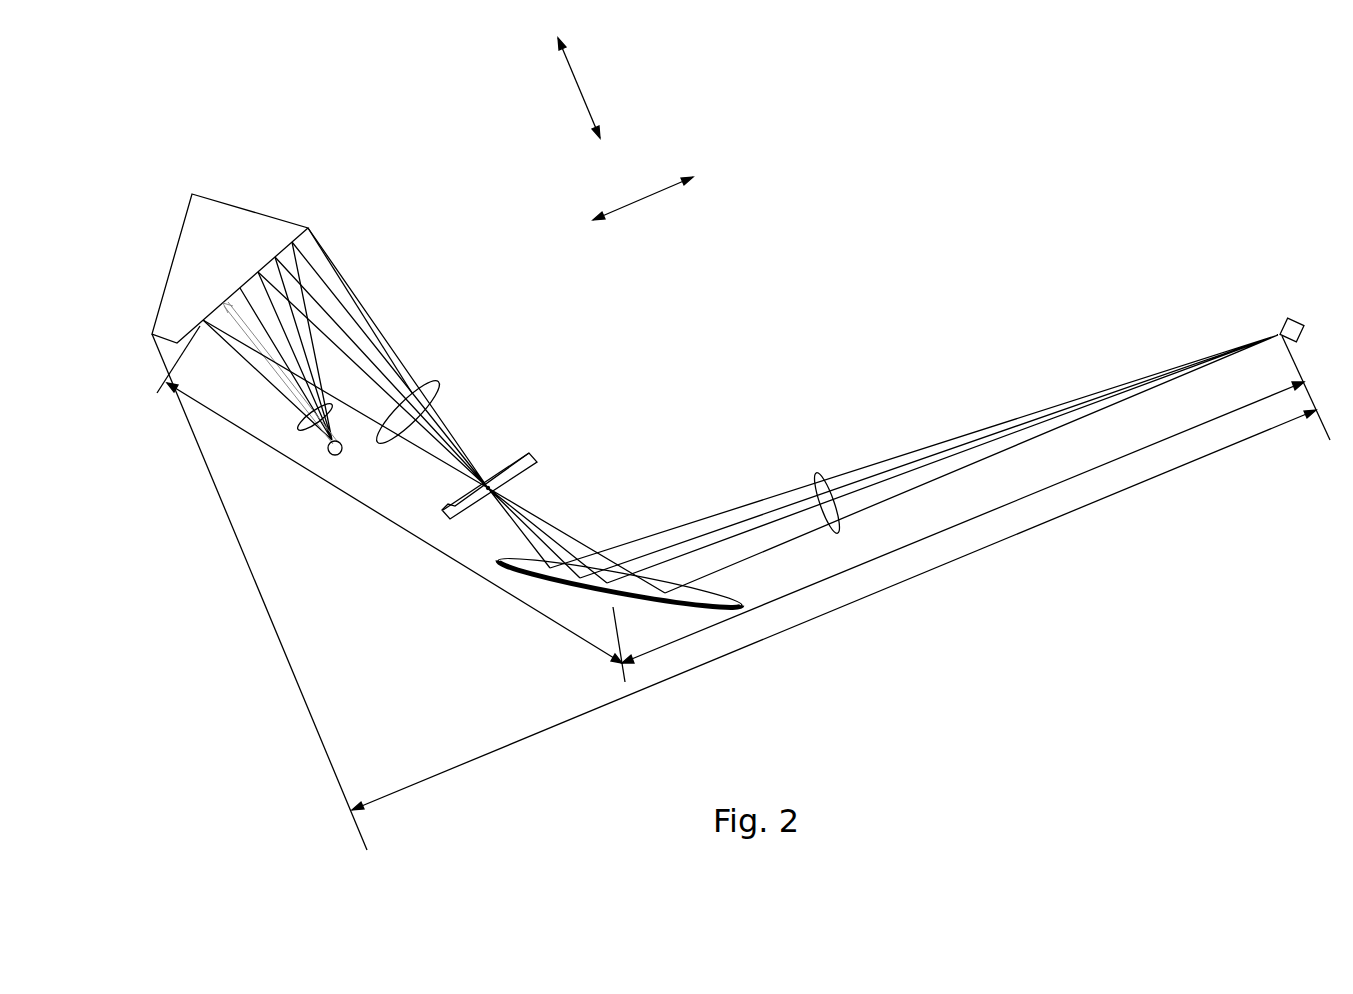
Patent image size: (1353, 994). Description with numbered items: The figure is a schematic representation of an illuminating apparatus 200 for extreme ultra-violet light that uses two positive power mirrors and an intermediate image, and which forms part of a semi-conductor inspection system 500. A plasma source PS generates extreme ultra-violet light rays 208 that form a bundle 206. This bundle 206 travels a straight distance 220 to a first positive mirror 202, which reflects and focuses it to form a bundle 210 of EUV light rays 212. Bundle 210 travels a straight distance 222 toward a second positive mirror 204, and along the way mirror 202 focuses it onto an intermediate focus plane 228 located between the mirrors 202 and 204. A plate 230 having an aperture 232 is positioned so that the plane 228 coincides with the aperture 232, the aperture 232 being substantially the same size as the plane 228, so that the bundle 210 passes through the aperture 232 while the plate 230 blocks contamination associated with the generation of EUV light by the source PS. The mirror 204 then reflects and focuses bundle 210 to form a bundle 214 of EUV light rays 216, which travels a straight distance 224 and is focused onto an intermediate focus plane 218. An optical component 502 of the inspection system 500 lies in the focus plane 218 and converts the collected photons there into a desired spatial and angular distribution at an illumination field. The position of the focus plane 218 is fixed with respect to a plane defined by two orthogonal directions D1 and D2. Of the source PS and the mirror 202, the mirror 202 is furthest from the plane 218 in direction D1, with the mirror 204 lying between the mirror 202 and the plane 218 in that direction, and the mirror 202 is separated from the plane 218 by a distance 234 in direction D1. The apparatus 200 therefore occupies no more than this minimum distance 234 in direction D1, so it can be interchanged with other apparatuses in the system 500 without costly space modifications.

The semi-conductor inspection system 500 is at (910, 117).
The illuminating apparatus 200 is at (797, 257).
The positive mirror 202 is at (222, 200).
The positive mirror 204 is at (540, 590).
The bundle of EUV light rays 206 is at (298, 427).
The EUV light rays 208 is at (236, 358).
The bundle of EUV light rays 210 is at (438, 382).
The EUV light rays 212 is at (370, 337).
The bundle of EUV light rays 214 is at (818, 472).
The EUV light rays 216 is at (948, 440).
The intermediate focus plane 218 is at (1268, 317).
The straight distance 220 is at (262, 347).
The straight distance 222 is at (373, 512).
The straight distance 224 is at (977, 518).
The intermediate focus plane 228 is at (517, 445).
The plate 230 is at (535, 462).
The aperture 232 is at (490, 477).
The distance 234 is at (875, 598).
The optical component 502 is at (1293, 320).
The plasma source PS is at (326, 453).
The direction D1 is at (640, 198).
The direction D2 is at (580, 88).